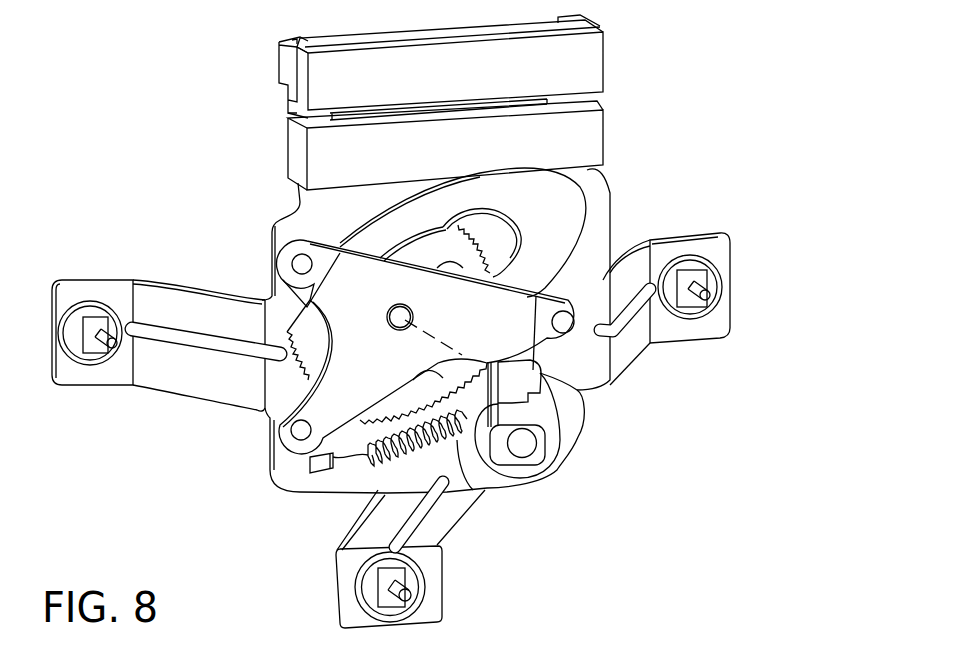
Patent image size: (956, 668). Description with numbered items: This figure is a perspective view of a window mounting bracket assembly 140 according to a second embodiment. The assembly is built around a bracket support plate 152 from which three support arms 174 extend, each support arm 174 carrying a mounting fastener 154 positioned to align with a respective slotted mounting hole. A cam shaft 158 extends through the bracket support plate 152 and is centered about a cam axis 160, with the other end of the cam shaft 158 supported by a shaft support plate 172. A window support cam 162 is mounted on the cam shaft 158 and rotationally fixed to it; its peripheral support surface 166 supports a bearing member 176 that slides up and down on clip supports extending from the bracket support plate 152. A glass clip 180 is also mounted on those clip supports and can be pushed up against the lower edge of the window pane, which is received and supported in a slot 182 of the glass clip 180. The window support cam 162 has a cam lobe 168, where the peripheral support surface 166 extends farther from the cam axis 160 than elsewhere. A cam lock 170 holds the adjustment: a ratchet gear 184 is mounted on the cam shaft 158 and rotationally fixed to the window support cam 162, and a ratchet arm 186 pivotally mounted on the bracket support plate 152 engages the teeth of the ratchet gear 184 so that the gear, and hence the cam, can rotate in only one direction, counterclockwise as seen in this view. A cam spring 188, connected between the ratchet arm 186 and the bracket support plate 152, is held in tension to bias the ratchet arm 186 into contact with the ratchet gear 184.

The window mounting bracket assembly 140 is at (748, 114).
The bracket support plate 152 is at (307, 493).
The mounting fastener 154 is at (123, 345).
The cam shaft 158 is at (395, 305).
The cam axis 160 is at (610, 270).
The window support cam 162 is at (430, 193).
The peripheral support surface 166 is at (578, 220).
The cam lobe 168 is at (575, 190).
The cam lock 170 is at (622, 451).
The shaft support plate 172 is at (270, 420).
The support arm 174 is at (687, 343).
The bearing member 176 is at (605, 110).
The glass clip 180 is at (290, 88).
The slot 182 is at (279, 63).
The ratchet gear 184 is at (338, 458).
The ratchet arm 186 is at (578, 395).
The cam spring 188 is at (473, 493).